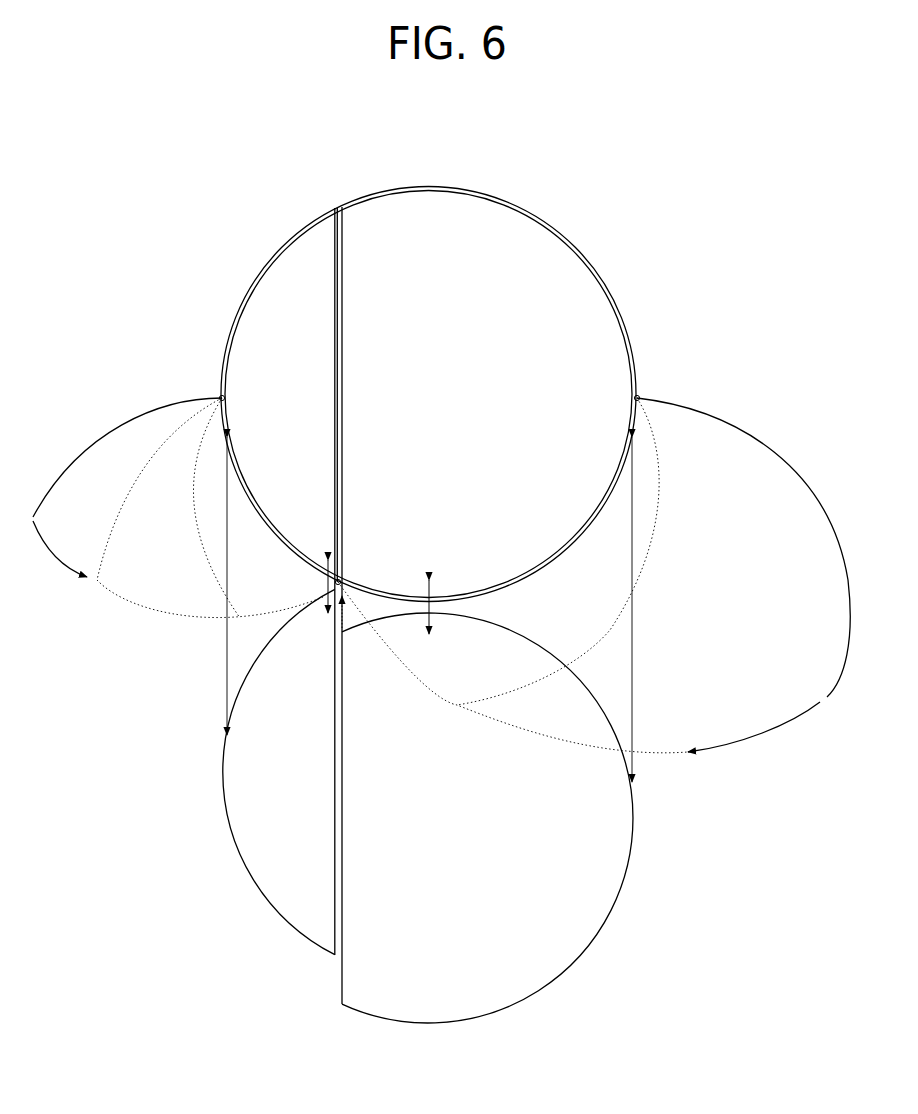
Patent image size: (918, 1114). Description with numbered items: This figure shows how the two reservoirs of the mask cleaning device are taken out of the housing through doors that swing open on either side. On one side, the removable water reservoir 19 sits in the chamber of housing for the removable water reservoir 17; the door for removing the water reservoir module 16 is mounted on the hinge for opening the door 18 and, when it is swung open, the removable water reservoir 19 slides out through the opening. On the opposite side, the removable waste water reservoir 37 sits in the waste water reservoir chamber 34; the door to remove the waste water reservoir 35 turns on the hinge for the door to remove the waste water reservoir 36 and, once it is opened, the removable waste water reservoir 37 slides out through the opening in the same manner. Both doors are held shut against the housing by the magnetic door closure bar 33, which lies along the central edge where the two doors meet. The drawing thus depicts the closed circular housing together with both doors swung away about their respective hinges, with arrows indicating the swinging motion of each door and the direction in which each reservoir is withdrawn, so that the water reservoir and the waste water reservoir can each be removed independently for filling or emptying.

The door for removing water reservoir module 16 is at (714, 410).
The chamber of housing for removable water reservoir 17 is at (637, 357).
The hinge for opening door for removing water reservoir module 18 is at (641, 397).
The removable water reservoir 19 is at (627, 836).
The magnetic door closure bar 33 is at (333, 585).
The waste water reservoir chamber 34 is at (190, 400).
The door to remove waste water reservoir 35 is at (220, 397).
The hinge for the door to remove the waste water reservoir 36 is at (226, 343).
The removable waste water reservoir 37 is at (268, 375).